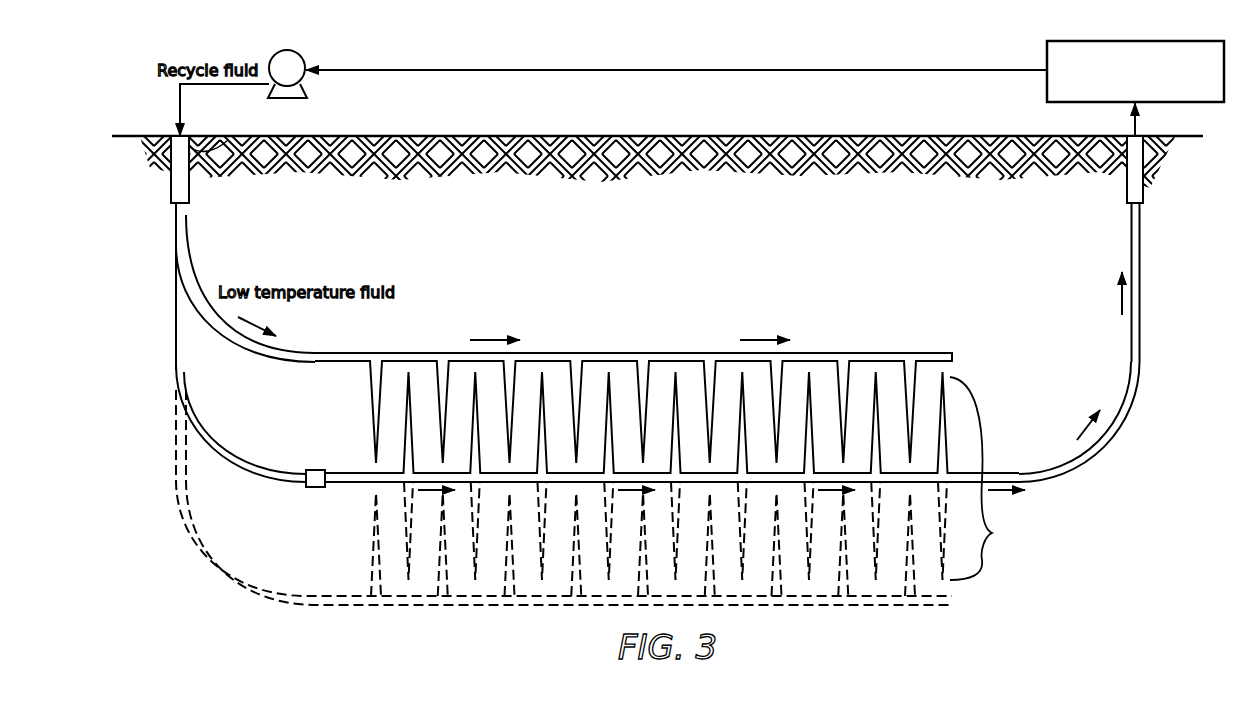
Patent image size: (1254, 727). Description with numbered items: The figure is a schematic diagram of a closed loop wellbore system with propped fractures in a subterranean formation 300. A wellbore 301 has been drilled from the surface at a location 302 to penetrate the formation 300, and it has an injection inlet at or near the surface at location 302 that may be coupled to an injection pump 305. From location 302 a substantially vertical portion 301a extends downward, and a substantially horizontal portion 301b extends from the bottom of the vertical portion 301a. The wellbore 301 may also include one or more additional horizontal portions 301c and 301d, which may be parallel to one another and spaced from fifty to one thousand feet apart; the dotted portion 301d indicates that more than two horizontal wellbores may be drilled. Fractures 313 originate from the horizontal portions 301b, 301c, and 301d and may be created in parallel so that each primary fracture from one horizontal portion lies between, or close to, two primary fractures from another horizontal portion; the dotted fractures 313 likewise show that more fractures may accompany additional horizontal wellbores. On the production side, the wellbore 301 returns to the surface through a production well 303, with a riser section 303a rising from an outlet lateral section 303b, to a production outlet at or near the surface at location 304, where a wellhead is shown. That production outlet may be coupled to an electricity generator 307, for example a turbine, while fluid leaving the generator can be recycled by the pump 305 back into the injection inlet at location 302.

The subterranean formation 300 is at (728, 207).
The wellbore 301 is at (190, 185).
The substantially vertical portion 301a is at (196, 268).
The substantially horizontal portion 301b is at (332, 470).
The additional horizontal portion 301c is at (330, 363).
The additional horizontal portion 301d is at (346, 592).
The surface location 302 is at (228, 140).
The production well casing 303 is at (1145, 176).
The riser section of production wellbore 303a is at (1130, 340).
The outlet lateral section of production wellbore 303b is at (992, 474).
The surface location 304 is at (1126, 150).
The injection pump 305 is at (297, 53).
The electricity generator 307 is at (1047, 52).
The fractures 313 is at (676, 476).